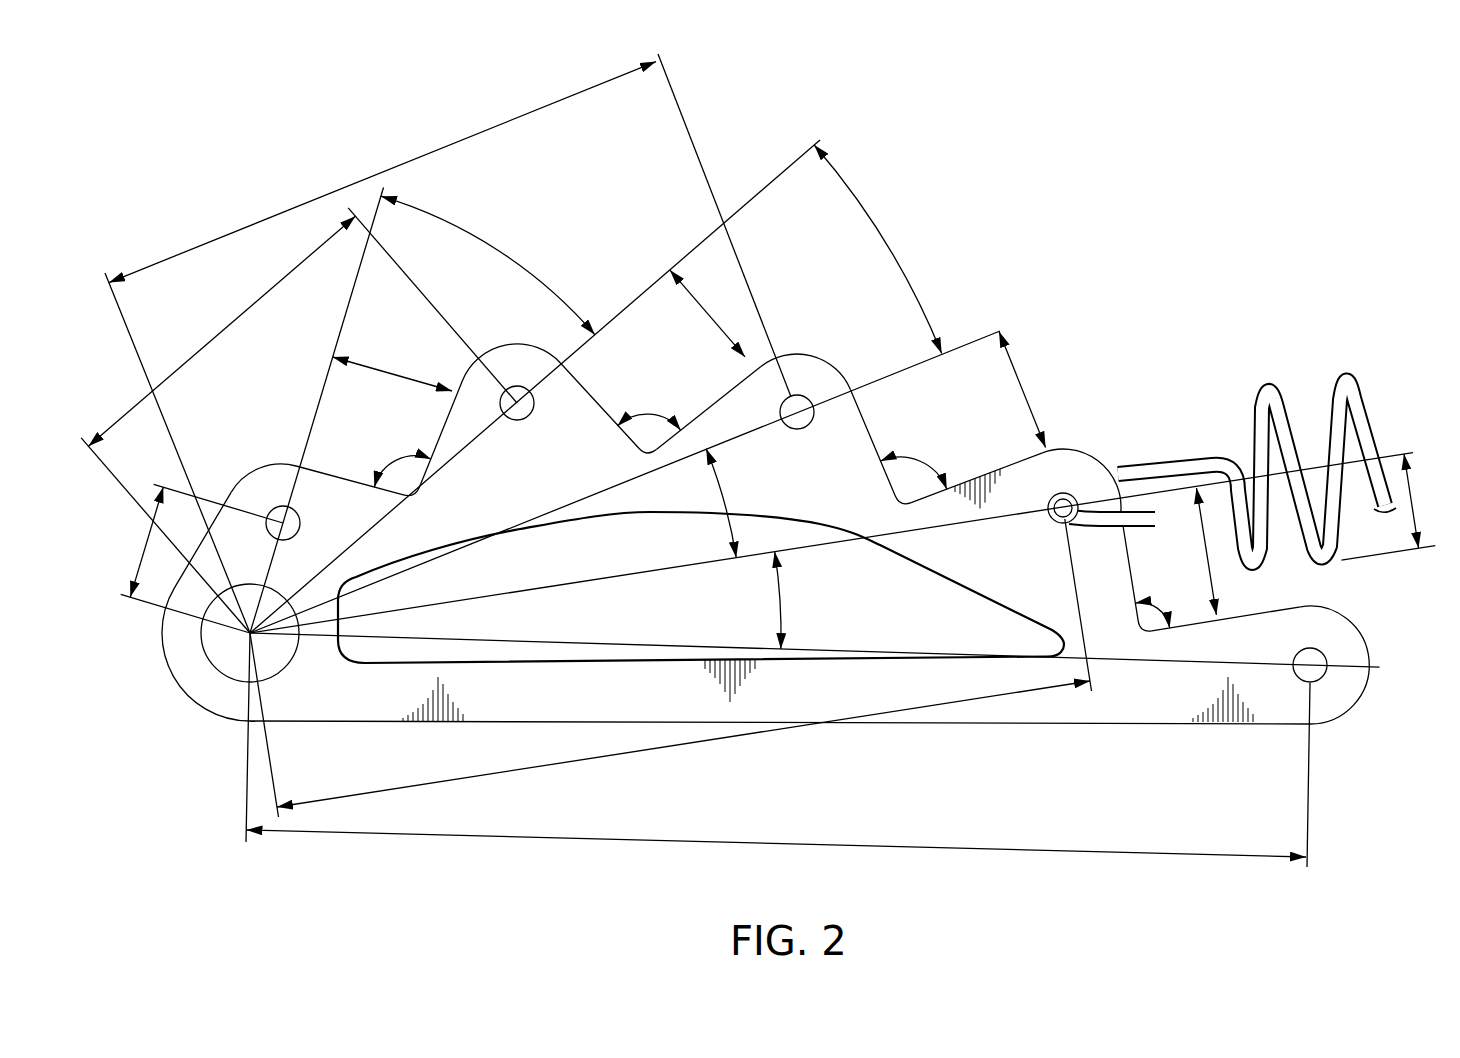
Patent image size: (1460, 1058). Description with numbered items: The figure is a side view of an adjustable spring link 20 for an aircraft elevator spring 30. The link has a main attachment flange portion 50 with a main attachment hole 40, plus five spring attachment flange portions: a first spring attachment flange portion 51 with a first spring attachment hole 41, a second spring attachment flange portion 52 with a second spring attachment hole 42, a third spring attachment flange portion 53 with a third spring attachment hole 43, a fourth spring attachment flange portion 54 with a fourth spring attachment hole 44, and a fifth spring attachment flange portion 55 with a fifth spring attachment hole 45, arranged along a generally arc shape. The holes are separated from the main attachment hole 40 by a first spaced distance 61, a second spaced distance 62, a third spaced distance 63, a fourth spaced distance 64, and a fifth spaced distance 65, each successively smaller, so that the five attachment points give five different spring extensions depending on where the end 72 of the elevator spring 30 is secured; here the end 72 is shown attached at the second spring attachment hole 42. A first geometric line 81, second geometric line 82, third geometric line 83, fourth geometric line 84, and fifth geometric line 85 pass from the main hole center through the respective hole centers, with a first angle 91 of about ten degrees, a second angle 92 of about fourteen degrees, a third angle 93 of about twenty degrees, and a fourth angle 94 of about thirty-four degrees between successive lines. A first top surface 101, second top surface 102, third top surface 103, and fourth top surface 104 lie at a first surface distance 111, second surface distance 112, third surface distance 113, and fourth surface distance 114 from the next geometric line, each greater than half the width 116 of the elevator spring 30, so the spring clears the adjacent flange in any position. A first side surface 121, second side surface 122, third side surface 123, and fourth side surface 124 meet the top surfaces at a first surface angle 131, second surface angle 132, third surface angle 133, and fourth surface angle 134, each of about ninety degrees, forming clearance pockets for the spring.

The adjustable spring link 20 is at (1355, 705).
The elevator spring 30 is at (1345, 372).
The main attachment hole 40 is at (204, 649).
The first spring attachment hole 41 is at (1294, 671).
The second spring attachment hole 42 is at (1050, 518).
The third spring attachment hole 43 is at (800, 430).
The fourth spring attachment hole 44 is at (520, 421).
The fifth spring attachment hole 45 is at (301, 523).
The main attachment flange portion 50 is at (181, 686).
The first spring attachment flange portion 51 is at (1363, 640).
The second spring attachment flange portion 52 is at (1086, 454).
The third spring attachment flange portion 53 is at (812, 352).
The fourth spring attachment flange portion 54 is at (510, 344).
The fifth spring attachment flange portion 55 is at (253, 472).
The first spaced distance 61 is at (782, 859).
The second spaced distance 62 is at (685, 746).
The third spaced distance 63 is at (388, 170).
The fourth spaced distance 64 is at (221, 333).
The fifth spaced distance 65 is at (146, 545).
The end of the elevator spring 72 is at (1108, 528).
The first geometric line 81 is at (1153, 661).
The second geometric line 82 is at (603, 577).
The third geometric line 83 is at (875, 380).
The fourth geometric line 84 is at (628, 306).
The fifth geometric line 85 is at (319, 397).
The first angle 91 is at (782, 600).
The second angle 92 is at (725, 497).
The third angle 93 is at (892, 250).
The fourth angle 94 is at (500, 248).
The first top surface 101 is at (1210, 621).
The second top surface 102 is at (1004, 466).
The third top surface 103 is at (710, 406).
The fourth top surface 104 is at (444, 432).
The first surface distance 111 is at (1212, 583).
The second surface distance 112 is at (1023, 395).
The third surface distance 113 is at (703, 312).
The fourth surface distance 114 is at (396, 374).
The width of the elevator spring 116 is at (1417, 500).
The first side surface 121 is at (1133, 594).
The second side surface 122 is at (862, 415).
The third side surface 123 is at (590, 397).
The fourth side surface 124 is at (348, 480).
The first surface angle 131 is at (1157, 606).
The second surface angle 132 is at (923, 462).
The third surface angle 133 is at (648, 412).
The fourth surface angle 134 is at (408, 455).